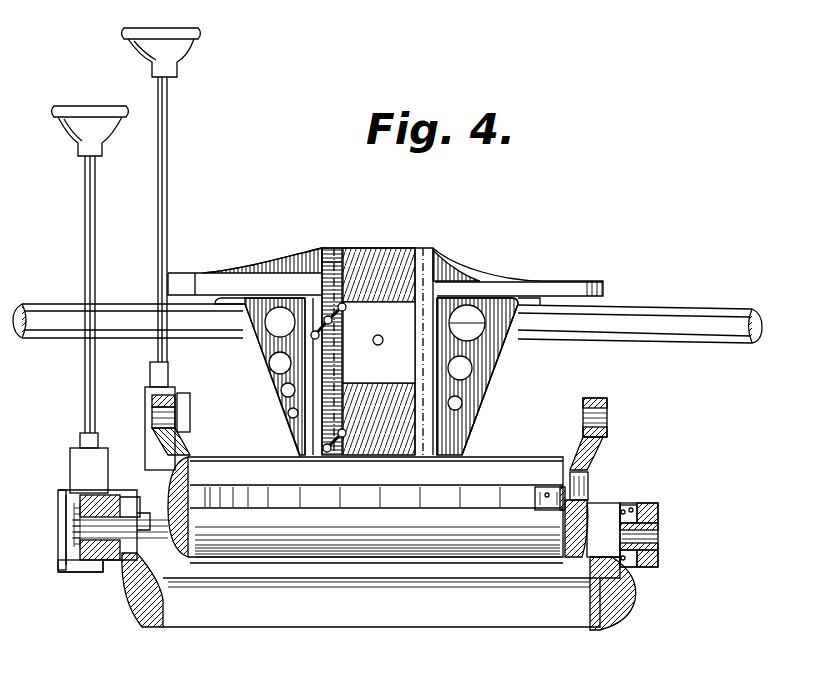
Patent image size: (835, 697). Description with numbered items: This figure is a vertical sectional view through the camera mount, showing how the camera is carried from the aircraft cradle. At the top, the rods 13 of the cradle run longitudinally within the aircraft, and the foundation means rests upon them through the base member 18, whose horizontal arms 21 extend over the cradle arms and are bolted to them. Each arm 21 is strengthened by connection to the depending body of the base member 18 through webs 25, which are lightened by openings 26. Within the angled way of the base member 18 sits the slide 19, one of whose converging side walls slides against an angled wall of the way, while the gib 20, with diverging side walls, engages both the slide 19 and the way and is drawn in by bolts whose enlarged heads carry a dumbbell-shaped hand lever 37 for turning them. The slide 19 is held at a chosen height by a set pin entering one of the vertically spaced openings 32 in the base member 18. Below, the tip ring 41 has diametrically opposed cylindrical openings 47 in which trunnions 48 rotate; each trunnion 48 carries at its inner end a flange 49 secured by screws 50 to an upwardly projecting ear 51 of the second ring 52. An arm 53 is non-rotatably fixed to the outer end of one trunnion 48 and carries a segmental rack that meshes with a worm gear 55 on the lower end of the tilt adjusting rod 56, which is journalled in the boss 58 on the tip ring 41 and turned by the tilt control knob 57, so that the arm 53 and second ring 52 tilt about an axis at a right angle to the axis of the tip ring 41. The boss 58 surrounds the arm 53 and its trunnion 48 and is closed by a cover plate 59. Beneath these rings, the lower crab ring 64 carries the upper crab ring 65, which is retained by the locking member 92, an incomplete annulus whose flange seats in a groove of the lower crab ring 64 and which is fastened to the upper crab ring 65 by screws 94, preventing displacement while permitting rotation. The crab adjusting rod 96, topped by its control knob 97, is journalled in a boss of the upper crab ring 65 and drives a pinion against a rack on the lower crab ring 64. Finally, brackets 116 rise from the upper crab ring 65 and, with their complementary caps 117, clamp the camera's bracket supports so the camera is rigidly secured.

The rods 13 is at (697, 311).
The base member 18 is at (459, 259).
The slide 19 is at (385, 391).
The gib 20 is at (330, 260).
The horizontal arms 21 is at (183, 280).
The webs 25 is at (462, 438).
The openings 26 is at (275, 325).
The vertically spaced openings 32 is at (373, 339).
The hand lever 37 is at (344, 307).
The tip ring 41 is at (657, 508).
The cylindrical openings 47 is at (657, 540).
The trunnion 48 is at (658, 528).
The flange 49 is at (603, 530).
The screws 50 is at (608, 562).
The ear 51 is at (630, 502).
The second ring 52 is at (618, 603).
The arm 53 is at (90, 554).
The worm gear 55 is at (64, 534).
The tilt adjusting rod 56 is at (85, 203).
The tilt control knob 57 is at (90, 106).
The boss 58 is at (76, 458).
The cover plate 59 is at (60, 518).
The lower crab ring 64 is at (618, 505).
The upper crab ring 65 is at (528, 493).
The locking member 92 is at (449, 495).
The screws 94 is at (568, 470).
The crab adjusting rod 96 is at (168, 133).
The control knob 97 is at (146, 36).
The brackets 116 is at (185, 437).
The cap 117 is at (628, 388).